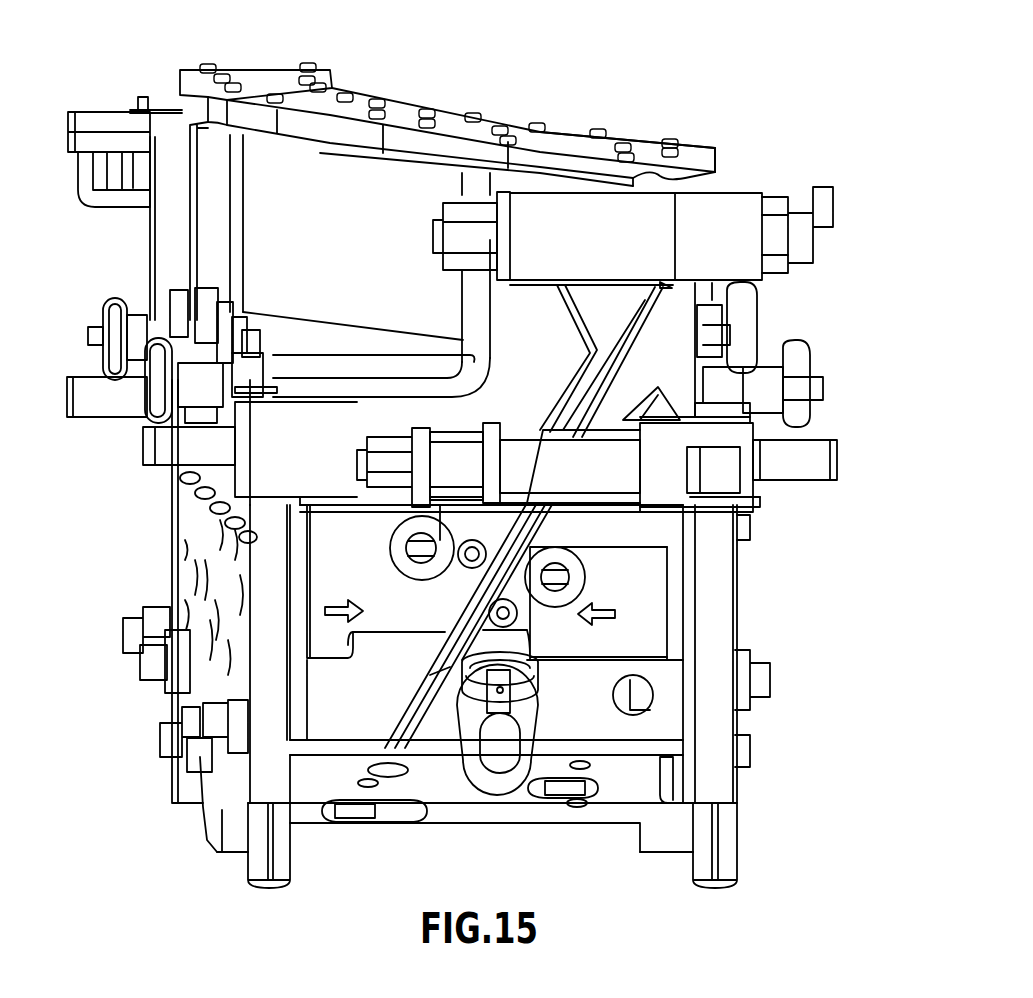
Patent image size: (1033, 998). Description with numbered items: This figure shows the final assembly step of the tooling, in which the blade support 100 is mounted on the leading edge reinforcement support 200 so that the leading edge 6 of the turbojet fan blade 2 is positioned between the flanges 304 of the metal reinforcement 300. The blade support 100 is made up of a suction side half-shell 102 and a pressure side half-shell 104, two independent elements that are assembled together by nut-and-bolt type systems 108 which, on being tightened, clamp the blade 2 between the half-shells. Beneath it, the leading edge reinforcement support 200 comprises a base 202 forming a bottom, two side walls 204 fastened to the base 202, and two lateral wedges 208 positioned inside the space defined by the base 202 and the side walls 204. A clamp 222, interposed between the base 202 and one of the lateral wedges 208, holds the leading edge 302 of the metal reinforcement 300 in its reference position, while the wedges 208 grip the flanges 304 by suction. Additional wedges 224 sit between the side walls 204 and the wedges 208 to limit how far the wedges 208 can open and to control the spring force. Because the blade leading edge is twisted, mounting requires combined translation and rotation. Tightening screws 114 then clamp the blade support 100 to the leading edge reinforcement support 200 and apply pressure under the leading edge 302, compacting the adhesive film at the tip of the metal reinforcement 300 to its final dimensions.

The blade support 100 is at (650, 112).
The pressure side half-shell 104 is at (567, 185).
The suction side half-shell 102 is at (700, 225).
The nut-and-bolt type systems 108 is at (455, 235).
The tightening screws 114 is at (217, 362).
The turbojet fan blade 2 is at (628, 382).
The flanges 304 is at (537, 525).
The leading edge reinforcement support 200 is at (745, 557).
The side walls 204 is at (270, 585).
The lateral wedges 208 is at (326, 530).
The additional wedges 224 is at (308, 600).
The metal reinforcement 300 is at (440, 598).
The leading edge 6 is at (525, 612).
The clamp 222 is at (397, 633).
The leading edge of the metal reinforcement 302 is at (420, 675).
The base 202 is at (585, 712).